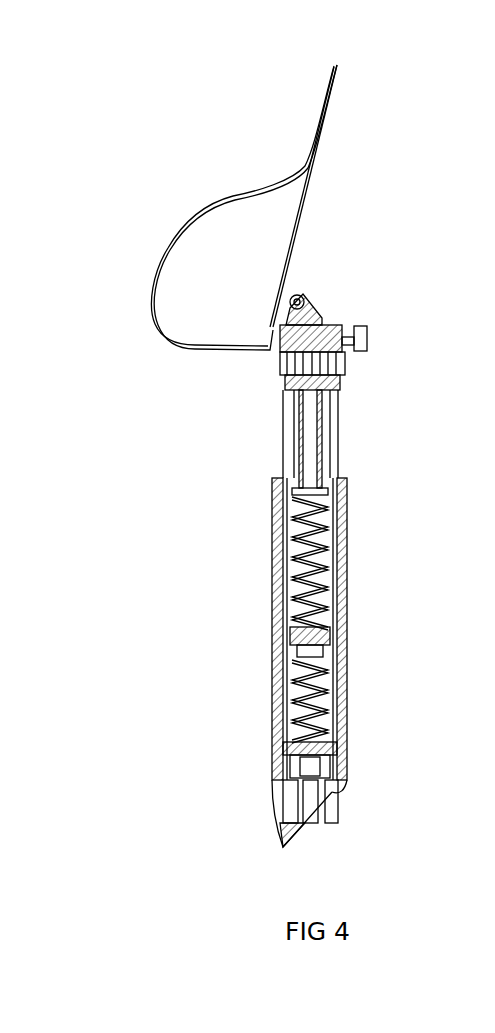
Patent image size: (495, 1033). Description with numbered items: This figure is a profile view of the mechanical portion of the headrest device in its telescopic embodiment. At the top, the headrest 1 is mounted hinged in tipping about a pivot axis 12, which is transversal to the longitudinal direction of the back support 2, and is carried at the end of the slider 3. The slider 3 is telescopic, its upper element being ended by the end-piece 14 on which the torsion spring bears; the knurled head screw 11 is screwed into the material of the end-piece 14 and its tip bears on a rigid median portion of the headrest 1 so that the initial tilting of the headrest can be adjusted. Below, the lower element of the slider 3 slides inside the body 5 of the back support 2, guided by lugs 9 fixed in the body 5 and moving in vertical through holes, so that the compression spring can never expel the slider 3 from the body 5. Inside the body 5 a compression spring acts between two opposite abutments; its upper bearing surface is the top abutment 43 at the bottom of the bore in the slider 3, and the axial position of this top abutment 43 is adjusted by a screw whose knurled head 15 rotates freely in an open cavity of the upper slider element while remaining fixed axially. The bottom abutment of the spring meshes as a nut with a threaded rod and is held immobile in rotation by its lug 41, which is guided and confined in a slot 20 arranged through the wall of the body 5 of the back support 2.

The headrest 1 is at (187, 205).
The back support 2 is at (253, 697).
The slider 3 is at (345, 446).
The body of the back support 5 is at (272, 748).
The lugs 9 is at (291, 637).
The knurled head screw 11 is at (367, 338).
The pivot axis 12 is at (301, 296).
The end-piece 14 is at (317, 323).
The knurled head 15 is at (293, 370).
The slot 20 is at (338, 706).
The lug 41 is at (338, 748).
The top abutment 43 is at (297, 490).